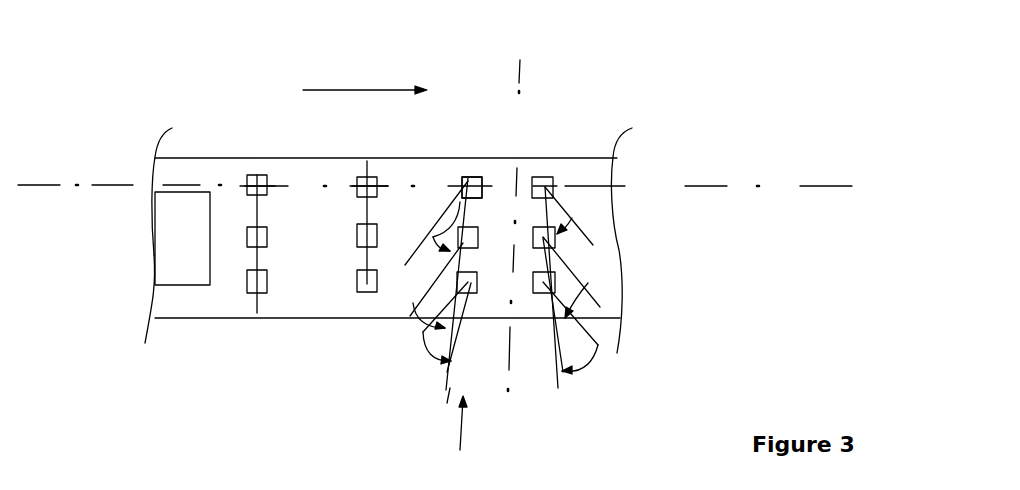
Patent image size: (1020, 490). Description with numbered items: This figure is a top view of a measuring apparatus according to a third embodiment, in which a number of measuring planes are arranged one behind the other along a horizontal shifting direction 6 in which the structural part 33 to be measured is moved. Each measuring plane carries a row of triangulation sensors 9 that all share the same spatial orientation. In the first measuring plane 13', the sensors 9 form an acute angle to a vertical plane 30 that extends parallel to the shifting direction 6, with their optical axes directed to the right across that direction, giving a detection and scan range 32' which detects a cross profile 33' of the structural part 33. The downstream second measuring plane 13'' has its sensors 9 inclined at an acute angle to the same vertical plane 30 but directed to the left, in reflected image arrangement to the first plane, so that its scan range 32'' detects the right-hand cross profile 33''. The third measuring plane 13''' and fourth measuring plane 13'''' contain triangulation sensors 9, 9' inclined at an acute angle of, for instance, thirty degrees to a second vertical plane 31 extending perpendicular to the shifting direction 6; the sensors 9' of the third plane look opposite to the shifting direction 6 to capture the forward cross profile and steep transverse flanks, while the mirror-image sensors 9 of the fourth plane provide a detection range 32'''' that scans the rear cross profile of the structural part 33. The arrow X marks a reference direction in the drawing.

The vertical plane 30 is at (27, 183).
The structural part 33 is at (182, 238).
The cross profile 33' is at (136, 157).
The right-hand cross profile 33'' is at (119, 326).
The first measuring plane 13' is at (261, 157).
The second measuring plane 13'' is at (345, 333).
The third measuring plane 13''' is at (490, 195).
The fourth measuring plane 13'''' is at (603, 211).
The triangulation sensor 9 is at (472, 147).
The triangulation sensor 9' is at (497, 151).
The shifting direction 6 is at (367, 85).
The detection and/or scan range 32' is at (216, 297).
The detection and/or scan range 32'' is at (327, 275).
The detection range 32'''' is at (645, 284).
The vertical plane 31 is at (511, 362).
The direction X is at (461, 425).